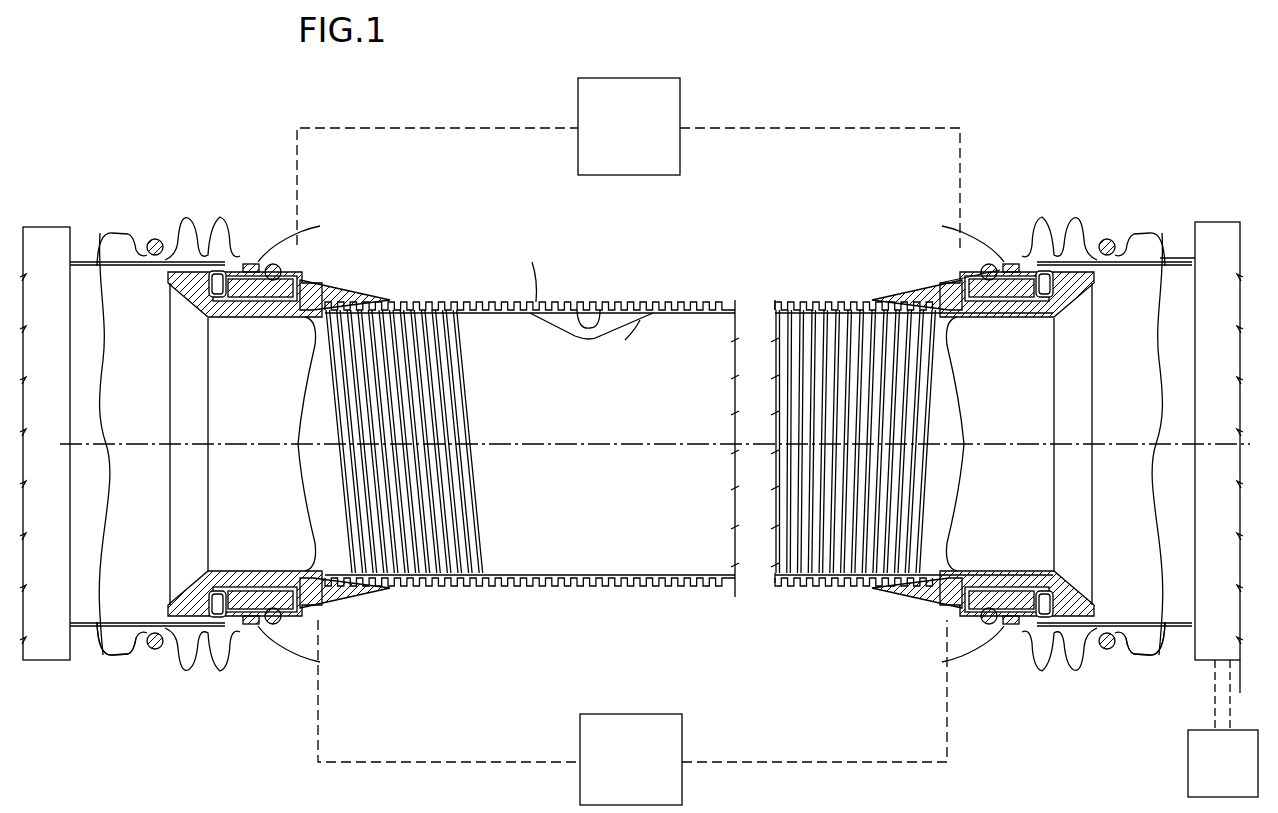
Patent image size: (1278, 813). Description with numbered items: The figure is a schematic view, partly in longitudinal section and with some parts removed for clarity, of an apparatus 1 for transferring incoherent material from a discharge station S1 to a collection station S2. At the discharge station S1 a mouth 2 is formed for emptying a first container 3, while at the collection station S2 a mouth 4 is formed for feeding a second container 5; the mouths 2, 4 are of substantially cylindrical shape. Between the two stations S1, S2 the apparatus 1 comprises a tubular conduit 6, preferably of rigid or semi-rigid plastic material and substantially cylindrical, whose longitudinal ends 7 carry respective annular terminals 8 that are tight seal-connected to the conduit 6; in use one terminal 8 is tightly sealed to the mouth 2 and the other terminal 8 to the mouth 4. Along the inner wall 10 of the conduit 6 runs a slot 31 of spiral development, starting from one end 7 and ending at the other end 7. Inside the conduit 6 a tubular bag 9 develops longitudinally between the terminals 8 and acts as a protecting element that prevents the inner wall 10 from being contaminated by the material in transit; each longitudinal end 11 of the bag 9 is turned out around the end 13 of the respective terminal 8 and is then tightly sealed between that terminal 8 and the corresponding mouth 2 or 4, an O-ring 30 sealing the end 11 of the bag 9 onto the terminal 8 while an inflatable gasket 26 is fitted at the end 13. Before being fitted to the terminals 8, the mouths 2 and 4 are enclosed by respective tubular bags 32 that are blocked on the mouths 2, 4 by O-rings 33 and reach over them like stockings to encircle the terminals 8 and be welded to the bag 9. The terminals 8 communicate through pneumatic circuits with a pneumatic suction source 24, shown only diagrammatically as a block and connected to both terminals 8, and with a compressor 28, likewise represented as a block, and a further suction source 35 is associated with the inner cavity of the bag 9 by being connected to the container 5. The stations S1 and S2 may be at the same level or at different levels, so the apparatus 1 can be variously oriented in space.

The apparatus 1 is at (866, 148).
The mouth 2 is at (132, 240).
The first container 3 is at (50, 250).
The mouth 4 is at (1165, 250).
The second container 5 is at (1222, 330).
The tubular conduit 6 is at (618, 304).
The longitudinal ends 7 is at (363, 598).
The annular terminals 8 is at (300, 630).
The tubular bag 9 is at (548, 300).
The inner wall 10 is at (583, 300).
The longitudinal end 11 is at (975, 263).
The end 13 is at (1058, 225).
The pneumatic suction source 24 is at (645, 770).
The inflatable gasket 26 is at (198, 655).
The compressor 28 is at (643, 138).
The O-ring 30 is at (275, 262).
The slot 31 is at (640, 320).
The tubular bags 32 is at (118, 648).
The O-rings 33 is at (163, 238).
The suction source 35 is at (1232, 772).
The discharge station S1 is at (96, 198).
The collection station S2 is at (1210, 190).